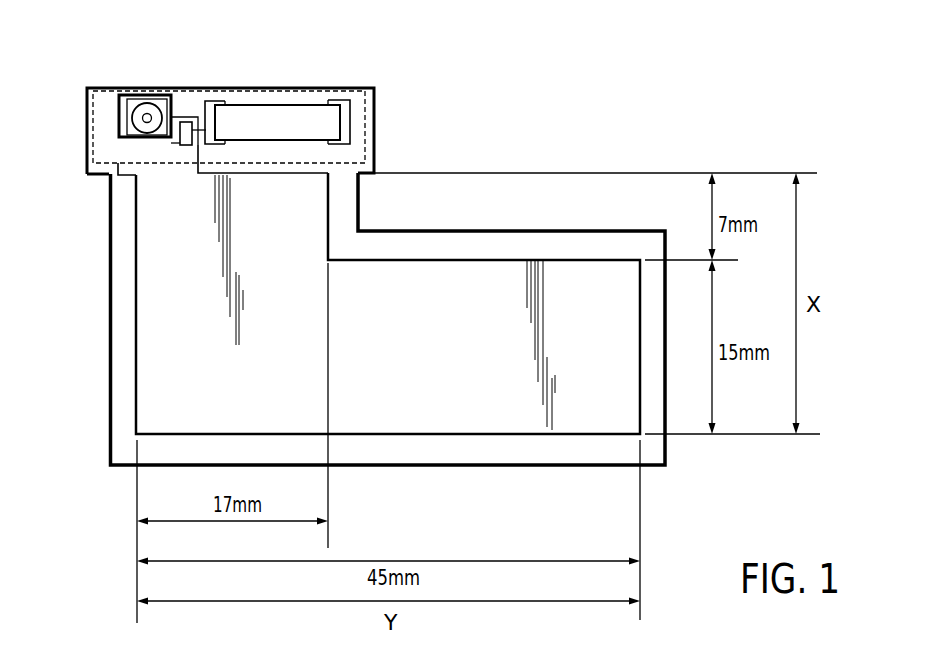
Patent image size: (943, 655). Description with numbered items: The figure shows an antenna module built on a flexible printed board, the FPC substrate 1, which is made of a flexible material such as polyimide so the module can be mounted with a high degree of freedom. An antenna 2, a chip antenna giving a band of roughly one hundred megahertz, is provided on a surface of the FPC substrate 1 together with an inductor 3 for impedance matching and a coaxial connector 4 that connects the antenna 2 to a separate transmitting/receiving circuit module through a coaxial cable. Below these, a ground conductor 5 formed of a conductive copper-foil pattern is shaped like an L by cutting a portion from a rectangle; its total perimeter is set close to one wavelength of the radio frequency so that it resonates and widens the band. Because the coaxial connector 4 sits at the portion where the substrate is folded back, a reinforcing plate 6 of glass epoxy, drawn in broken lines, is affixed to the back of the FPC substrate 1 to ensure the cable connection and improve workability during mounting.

The FPC substrate 1 is at (231, 78).
The antenna 2 is at (298, 107).
The inductor 3 is at (185, 122).
The coaxial connector 4 is at (124, 118).
The ground conductor 5 is at (137, 254).
The reinforcing plate 6 is at (375, 130).